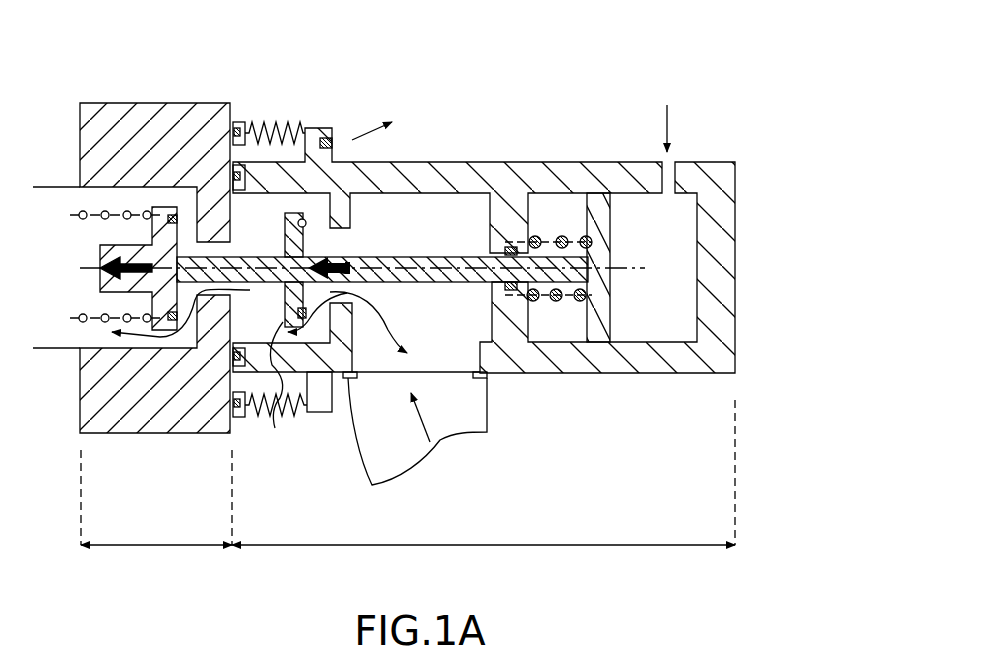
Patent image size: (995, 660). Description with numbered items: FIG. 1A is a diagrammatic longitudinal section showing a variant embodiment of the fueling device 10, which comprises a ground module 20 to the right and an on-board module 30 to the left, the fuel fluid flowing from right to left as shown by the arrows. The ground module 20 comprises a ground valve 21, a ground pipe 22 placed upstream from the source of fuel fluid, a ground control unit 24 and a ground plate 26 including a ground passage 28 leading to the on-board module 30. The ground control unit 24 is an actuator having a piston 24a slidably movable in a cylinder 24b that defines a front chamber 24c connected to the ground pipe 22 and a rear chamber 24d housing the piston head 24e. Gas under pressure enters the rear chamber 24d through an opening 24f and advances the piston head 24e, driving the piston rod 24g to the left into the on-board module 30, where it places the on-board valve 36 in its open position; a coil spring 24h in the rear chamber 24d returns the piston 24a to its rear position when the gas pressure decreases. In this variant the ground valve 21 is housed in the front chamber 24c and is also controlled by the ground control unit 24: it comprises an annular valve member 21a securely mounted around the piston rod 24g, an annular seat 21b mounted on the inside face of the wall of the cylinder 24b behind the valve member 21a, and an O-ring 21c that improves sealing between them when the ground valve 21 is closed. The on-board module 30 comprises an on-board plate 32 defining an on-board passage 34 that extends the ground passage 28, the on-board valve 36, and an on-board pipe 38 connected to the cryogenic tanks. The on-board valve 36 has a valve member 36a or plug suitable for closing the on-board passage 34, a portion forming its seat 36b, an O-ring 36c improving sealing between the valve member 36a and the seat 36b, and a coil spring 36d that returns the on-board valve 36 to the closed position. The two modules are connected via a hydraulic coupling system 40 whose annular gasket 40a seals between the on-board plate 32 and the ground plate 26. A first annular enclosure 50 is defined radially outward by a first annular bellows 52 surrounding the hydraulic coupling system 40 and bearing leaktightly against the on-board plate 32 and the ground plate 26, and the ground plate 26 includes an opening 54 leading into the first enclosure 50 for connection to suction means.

The fueling device 10 is at (544, 150).
The ground module 20 is at (483, 472).
The ground valve 21 is at (322, 332).
The annular valve member 21a is at (276, 422).
The annular seat 21b is at (372, 389).
The O-ring 21c is at (352, 320).
The ground pipe 22 is at (470, 405).
The ground control unit 24 is at (412, 162).
The piston 24a is at (474, 245).
The cylinder 24b is at (620, 165).
The front chamber 24c is at (420, 240).
The rear chamber 24d is at (680, 236).
The piston head 24e is at (600, 308).
The opening 24f is at (668, 182).
The piston rod 24g is at (422, 283).
The coil spring 24h is at (553, 312).
The ground plate 26 is at (310, 128).
The ground passage 28 is at (310, 198).
The on-board module 30 is at (156, 497).
The on-board plate 32 is at (105, 133).
The on-board passage 34 is at (172, 212).
The on-board valve 36 is at (84, 285).
The valve member 36a is at (100, 270).
The seat 36b is at (192, 226).
The O-ring 36c is at (172, 207).
The coil spring 36d is at (83, 219).
The on-board pipe 38 is at (42, 352).
The hydraulic coupling system 40 is at (271, 164).
The annular gasket 40a is at (223, 357).
The first annular enclosure 50 is at (290, 122).
The first annular bellows 52 is at (266, 122).
The opening 54 is at (338, 138).